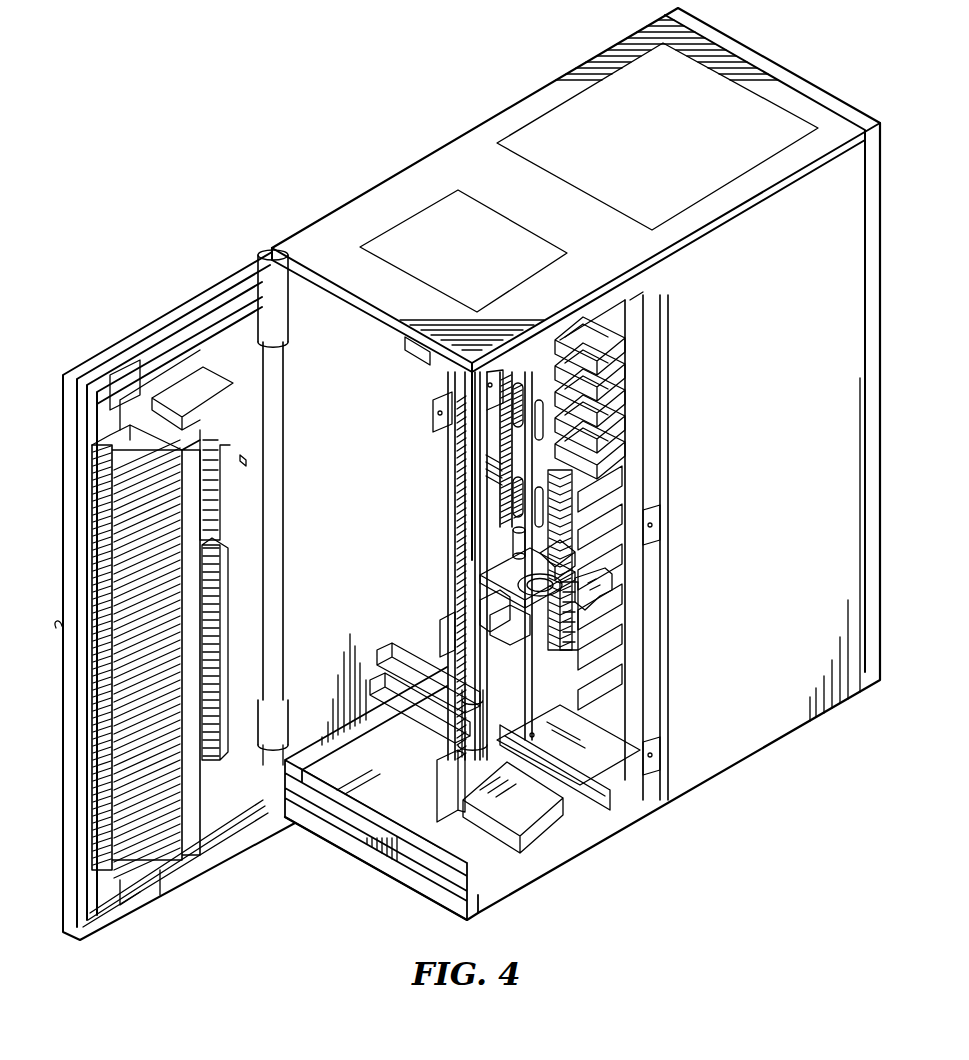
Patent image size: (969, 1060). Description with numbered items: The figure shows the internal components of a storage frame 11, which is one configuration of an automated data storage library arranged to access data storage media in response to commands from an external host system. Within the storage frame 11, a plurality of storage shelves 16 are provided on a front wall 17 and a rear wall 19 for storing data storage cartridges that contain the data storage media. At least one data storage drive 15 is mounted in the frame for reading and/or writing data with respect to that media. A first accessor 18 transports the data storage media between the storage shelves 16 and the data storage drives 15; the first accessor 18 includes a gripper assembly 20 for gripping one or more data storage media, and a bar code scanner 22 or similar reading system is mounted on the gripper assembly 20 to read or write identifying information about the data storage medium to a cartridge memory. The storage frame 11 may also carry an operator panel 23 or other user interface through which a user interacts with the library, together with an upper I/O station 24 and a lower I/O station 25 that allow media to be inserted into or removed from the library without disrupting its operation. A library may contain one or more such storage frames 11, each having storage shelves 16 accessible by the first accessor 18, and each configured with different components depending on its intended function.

The storage frame 11 is at (316, 95).
The data storage drive 15 is at (625, 325).
The storage shelves 16 is at (92, 722).
The front wall 17 is at (65, 520).
The first accessor 18 is at (575, 812).
The rear wall 19 is at (448, 377).
The gripper assembly 20 is at (600, 590).
The bar code scanner 22 is at (487, 604).
The operator panel 23 is at (255, 372).
The upper I/O station 24 is at (230, 418).
The lower I/O station 25 is at (225, 607).